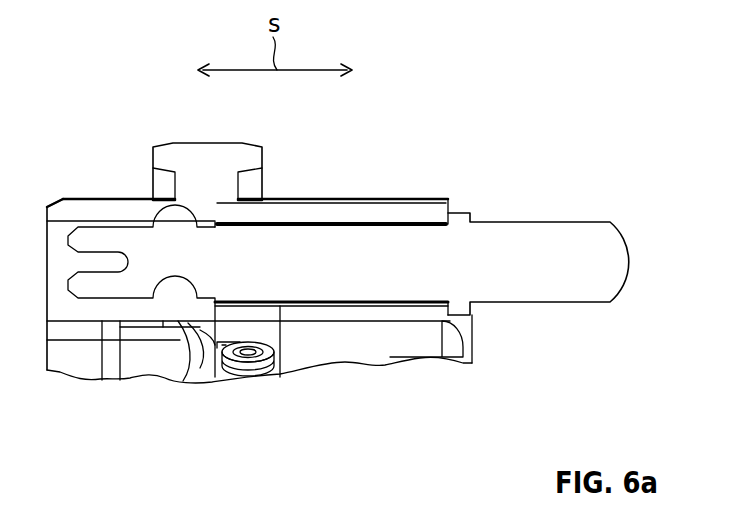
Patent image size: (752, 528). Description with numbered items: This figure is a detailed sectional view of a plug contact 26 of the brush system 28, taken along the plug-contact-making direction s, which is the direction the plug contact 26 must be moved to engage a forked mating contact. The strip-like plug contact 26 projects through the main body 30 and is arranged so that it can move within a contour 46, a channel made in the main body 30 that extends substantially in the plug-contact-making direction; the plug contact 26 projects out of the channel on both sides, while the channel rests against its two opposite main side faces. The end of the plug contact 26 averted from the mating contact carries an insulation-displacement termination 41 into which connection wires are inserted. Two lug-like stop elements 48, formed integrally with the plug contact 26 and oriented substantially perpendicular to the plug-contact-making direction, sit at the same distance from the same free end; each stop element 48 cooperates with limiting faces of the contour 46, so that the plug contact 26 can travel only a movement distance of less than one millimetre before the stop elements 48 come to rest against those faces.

The plug contact 26 is at (387, 257).
The brush system 28 is at (577, 159).
The main body 30 is at (88, 212).
The insulation-displacement termination 41 is at (107, 263).
The contour 46 is at (405, 302).
The stop element 48 is at (257, 222).